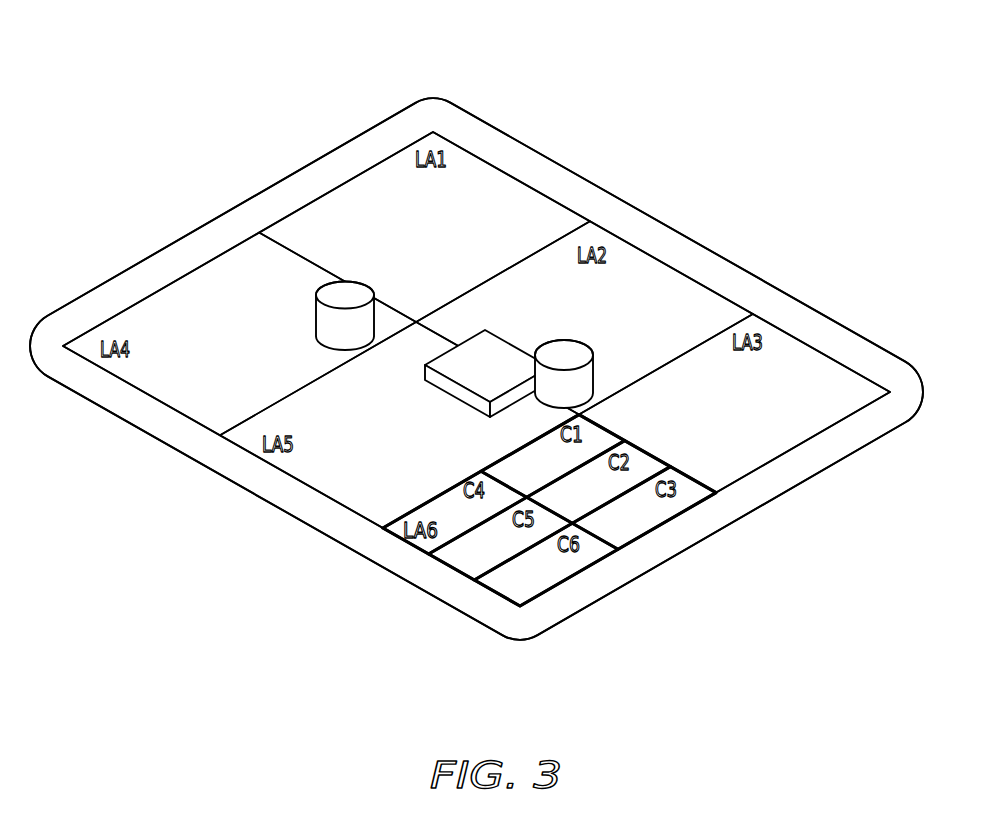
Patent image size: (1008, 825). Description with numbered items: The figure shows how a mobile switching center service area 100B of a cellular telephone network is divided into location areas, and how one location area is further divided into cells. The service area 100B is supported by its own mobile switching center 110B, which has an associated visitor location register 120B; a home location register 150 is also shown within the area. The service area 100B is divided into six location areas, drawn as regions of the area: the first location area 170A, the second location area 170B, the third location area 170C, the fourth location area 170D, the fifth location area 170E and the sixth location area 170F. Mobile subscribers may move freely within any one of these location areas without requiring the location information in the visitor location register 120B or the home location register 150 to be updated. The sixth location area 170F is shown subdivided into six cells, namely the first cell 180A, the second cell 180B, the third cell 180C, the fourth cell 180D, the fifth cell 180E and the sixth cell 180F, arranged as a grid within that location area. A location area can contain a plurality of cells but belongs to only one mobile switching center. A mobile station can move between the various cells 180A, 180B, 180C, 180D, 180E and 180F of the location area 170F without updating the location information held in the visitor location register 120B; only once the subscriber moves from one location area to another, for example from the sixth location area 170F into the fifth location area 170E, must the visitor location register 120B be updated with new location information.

The location area LA1 170A is at (470, 187).
The location area LA2 170B is at (633, 280).
The location area LA3 170C is at (792, 373).
The location area LA4 170D is at (140, 368).
The location area LA5 170E is at (303, 467).
The location area LA6 170F is at (397, 547).
The cell C1 180A is at (587, 435).
The cell C2 180B is at (638, 465).
The cell C3 180C is at (683, 488).
The cell C4 180D is at (460, 525).
The cell C5 180E is at (512, 547).
The cell C6 180F is at (573, 563).
The mobile switching center 110B is at (500, 335).
The visitor location register 120B is at (588, 345).
The home location register 150 is at (316, 318).
The mobile switching center service area 100B is at (545, 630).